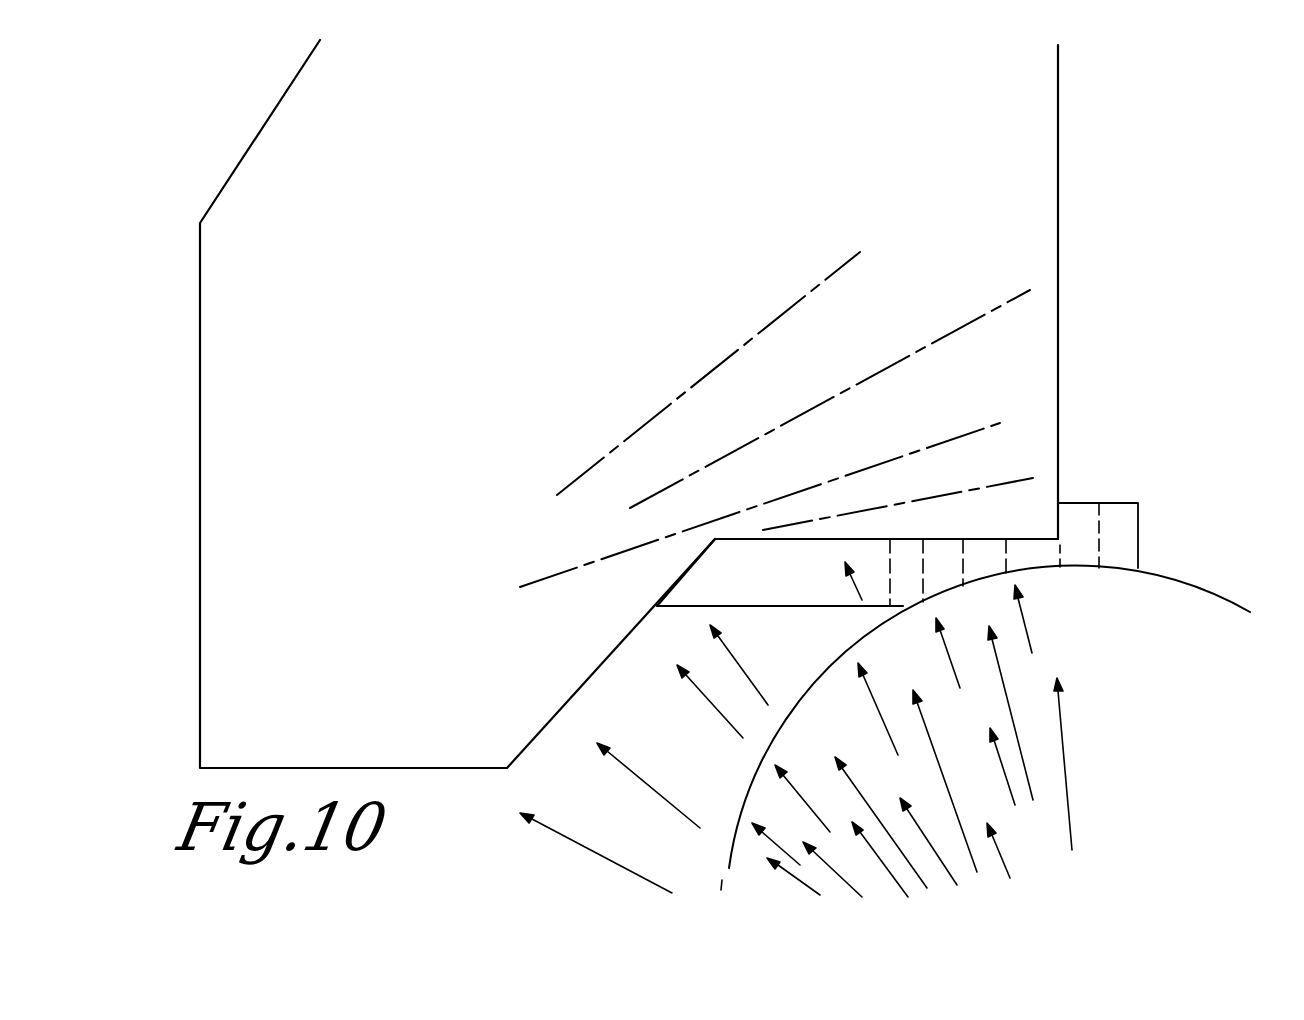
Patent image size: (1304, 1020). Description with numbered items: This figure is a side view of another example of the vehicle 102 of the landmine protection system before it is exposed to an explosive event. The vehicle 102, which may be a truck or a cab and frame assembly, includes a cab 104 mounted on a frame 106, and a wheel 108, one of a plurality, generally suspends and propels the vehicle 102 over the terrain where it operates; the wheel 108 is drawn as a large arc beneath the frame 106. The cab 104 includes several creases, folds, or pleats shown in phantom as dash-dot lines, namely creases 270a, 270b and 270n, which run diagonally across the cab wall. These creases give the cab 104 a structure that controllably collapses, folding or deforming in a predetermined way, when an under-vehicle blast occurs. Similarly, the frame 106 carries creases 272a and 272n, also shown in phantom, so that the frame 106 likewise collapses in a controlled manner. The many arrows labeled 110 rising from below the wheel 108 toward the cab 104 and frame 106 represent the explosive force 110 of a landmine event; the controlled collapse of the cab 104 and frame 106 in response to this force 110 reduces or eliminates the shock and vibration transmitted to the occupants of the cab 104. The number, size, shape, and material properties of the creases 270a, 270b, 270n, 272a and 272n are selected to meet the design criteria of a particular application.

The vehicle 102 is at (1128, 81).
The cab 104 is at (232, 172).
The frame 106 is at (670, 607).
The wheels 108 is at (1190, 590).
The explosive force 110 is at (755, 678).
The crease 270a is at (673, 403).
The crease 270b is at (727, 458).
The crease 270n is at (907, 502).
The crease 272a is at (890, 560).
The crease 272n is at (1098, 520).